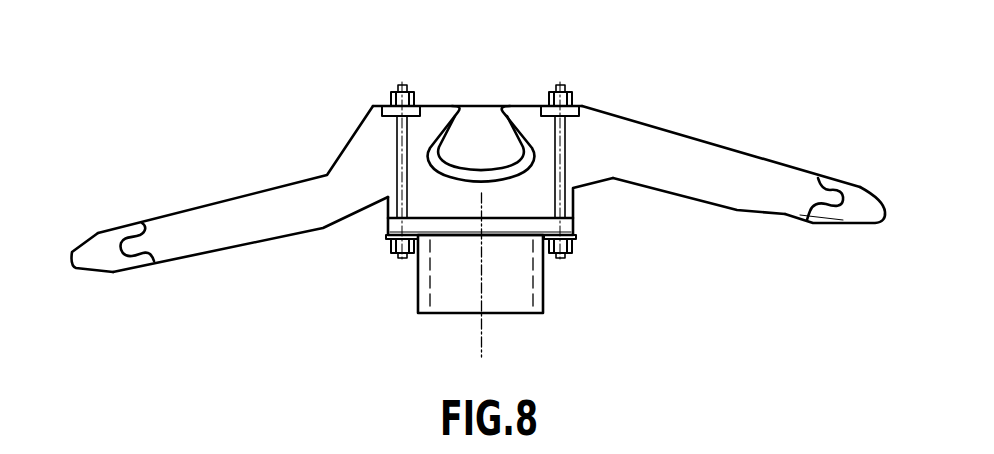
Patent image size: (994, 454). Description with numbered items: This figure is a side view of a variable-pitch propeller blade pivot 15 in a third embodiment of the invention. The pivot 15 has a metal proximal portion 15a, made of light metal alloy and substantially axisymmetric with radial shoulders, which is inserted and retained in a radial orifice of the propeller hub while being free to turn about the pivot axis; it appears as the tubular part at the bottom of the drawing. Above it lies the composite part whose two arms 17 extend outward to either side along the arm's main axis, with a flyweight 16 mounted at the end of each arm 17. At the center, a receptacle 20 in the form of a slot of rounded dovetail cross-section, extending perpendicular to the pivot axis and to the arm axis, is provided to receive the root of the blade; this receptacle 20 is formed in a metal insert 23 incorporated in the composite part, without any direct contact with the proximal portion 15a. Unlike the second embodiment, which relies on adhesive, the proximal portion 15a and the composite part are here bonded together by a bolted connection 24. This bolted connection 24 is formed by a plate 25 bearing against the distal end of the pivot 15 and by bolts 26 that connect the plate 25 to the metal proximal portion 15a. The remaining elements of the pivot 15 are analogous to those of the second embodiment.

The propeller blade pivot 15 is at (643, 116).
The proximal portion 15a is at (543, 296).
The flyweights 16 is at (94, 243).
The arms 17 is at (217, 202).
The receptacle 20 is at (487, 145).
The metal insert 23 is at (444, 121).
The bolted connection 24 is at (575, 73).
The plate 25 is at (382, 112).
The bolts 26 is at (392, 96).